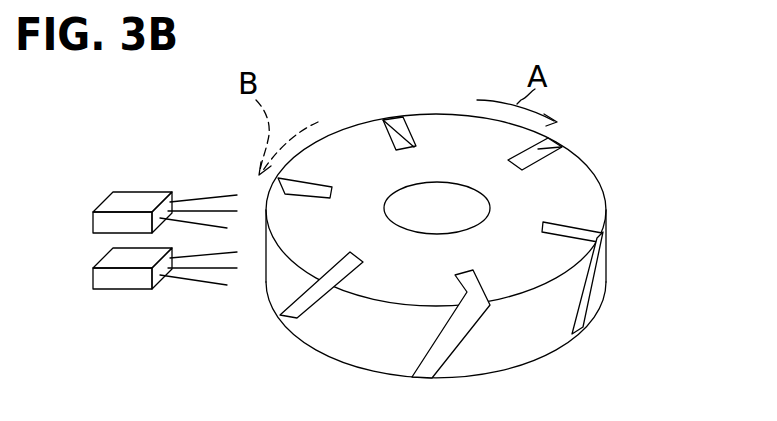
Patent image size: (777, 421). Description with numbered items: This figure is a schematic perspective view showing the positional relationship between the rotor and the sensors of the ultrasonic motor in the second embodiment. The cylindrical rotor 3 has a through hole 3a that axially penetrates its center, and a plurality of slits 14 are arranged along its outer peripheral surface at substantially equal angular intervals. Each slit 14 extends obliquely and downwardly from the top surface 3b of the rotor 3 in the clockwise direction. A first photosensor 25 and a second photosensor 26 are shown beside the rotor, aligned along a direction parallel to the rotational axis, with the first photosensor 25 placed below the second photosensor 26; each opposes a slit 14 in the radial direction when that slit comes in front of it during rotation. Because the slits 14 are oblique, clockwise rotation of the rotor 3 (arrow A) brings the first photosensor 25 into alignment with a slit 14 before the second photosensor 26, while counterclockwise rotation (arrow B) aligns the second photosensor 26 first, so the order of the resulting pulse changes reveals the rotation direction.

The rotor 3 is at (612, 312).
The through hole 3a is at (412, 234).
The top surface 3b is at (523, 278).
The slits 14 is at (306, 188).
The first photosensor 25 is at (117, 288).
The second photosensor 26 is at (135, 196).